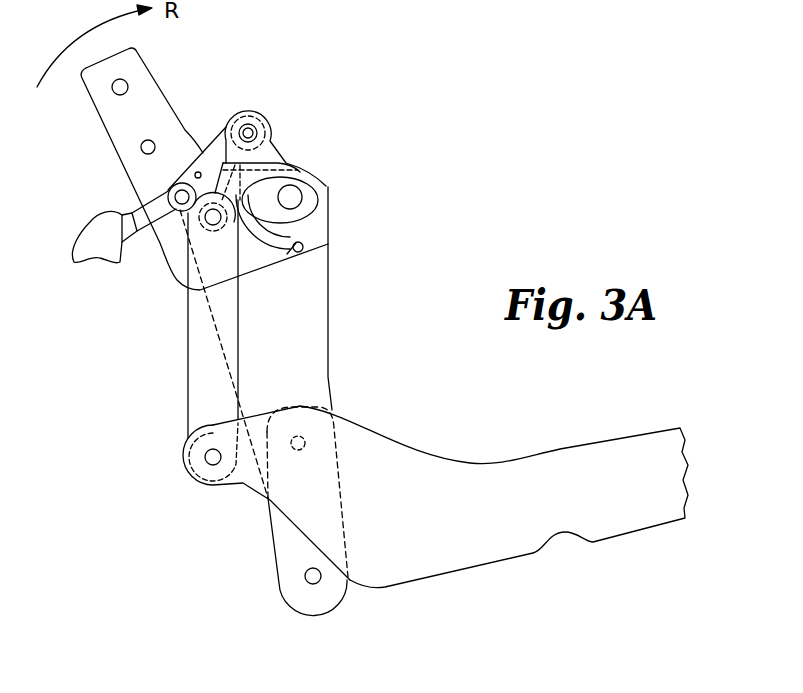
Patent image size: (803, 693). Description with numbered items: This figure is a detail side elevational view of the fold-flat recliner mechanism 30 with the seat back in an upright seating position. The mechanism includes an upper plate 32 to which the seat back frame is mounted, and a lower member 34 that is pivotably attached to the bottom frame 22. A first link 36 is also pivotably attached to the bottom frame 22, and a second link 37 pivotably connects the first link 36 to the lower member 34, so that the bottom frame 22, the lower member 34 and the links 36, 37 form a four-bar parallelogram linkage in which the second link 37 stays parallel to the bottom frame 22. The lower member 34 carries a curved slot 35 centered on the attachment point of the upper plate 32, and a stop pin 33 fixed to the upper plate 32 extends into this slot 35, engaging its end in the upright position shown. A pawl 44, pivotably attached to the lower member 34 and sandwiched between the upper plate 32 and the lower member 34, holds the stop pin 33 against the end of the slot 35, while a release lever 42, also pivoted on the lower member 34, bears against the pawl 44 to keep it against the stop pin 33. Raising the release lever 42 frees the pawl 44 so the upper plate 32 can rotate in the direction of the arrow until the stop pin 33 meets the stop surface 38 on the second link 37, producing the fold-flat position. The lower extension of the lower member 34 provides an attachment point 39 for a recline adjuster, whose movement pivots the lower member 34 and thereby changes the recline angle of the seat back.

The bottom frame 22 is at (493, 463).
The fold-flat recliner mechanism 30 is at (513, 190).
The upper plate 32 is at (160, 99).
The stop pin 33 is at (317, 235).
The lower member 34 is at (330, 317).
The curved slot 35 is at (283, 238).
The first link 36 is at (187, 323).
The second link 37 is at (277, 148).
The stop surface 38 is at (280, 172).
The attachment point for recline adjuster 39 is at (303, 575).
The release lever 42 is at (82, 233).
The pawl 44 is at (233, 110).